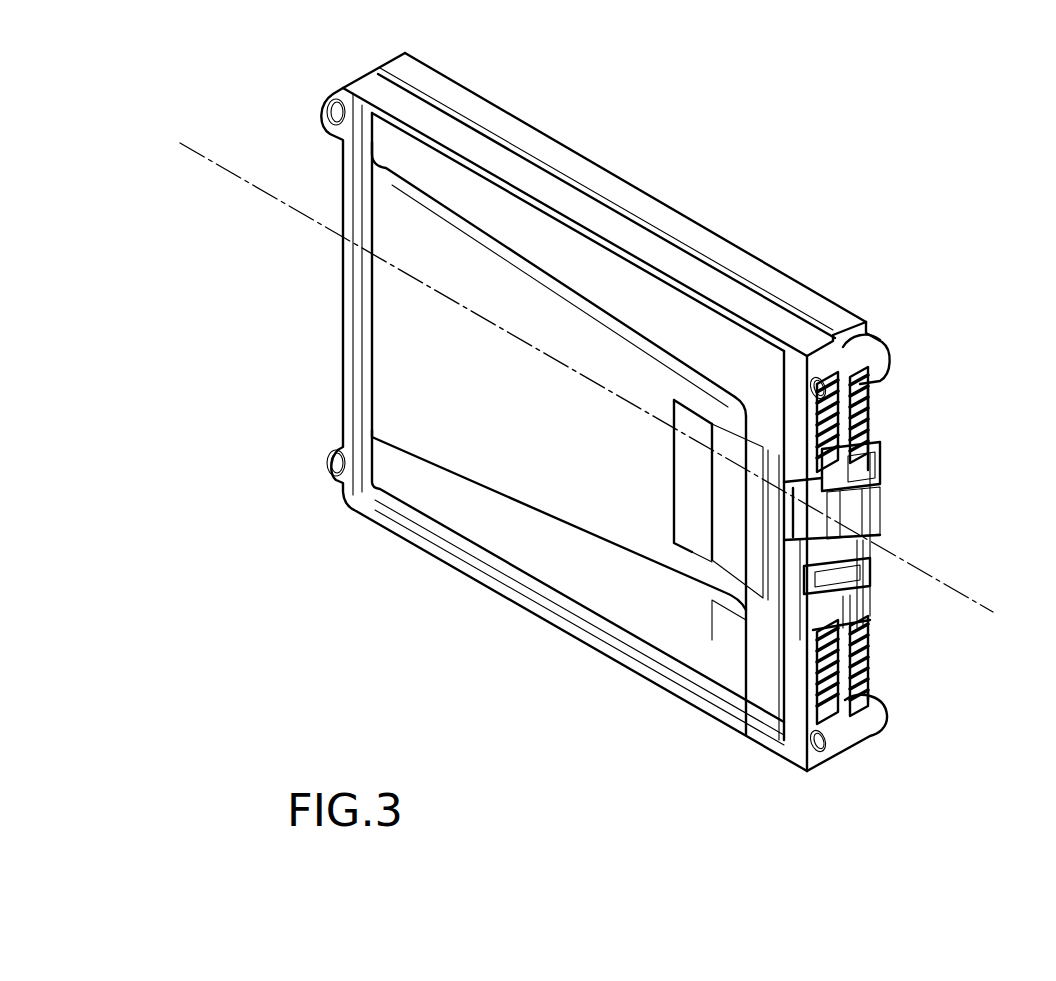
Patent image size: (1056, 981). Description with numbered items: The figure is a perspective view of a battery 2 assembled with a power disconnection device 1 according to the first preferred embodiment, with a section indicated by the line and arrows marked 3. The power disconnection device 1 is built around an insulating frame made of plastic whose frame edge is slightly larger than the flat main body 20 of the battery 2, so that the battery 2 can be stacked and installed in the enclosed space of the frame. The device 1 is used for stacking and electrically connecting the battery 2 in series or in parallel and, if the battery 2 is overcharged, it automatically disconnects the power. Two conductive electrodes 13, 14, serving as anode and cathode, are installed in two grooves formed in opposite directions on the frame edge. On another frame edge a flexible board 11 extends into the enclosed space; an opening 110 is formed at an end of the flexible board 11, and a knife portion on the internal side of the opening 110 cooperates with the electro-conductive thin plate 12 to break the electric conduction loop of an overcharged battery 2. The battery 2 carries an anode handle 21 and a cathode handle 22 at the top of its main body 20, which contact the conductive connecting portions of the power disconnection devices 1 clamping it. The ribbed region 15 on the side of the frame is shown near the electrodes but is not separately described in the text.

The power disconnection device 1 is at (758, 247).
The battery 2 is at (658, 660).
The section line 3 is at (180, 143).
The flexible board 11 is at (512, 450).
The opening 110 is at (687, 487).
The electro-conductive thin plate 12 is at (701, 541).
The conductive electrode 13 is at (870, 527).
The conductive electrode 14 is at (847, 643).
The ribbed portion 15 is at (760, 420).
The main body 20 is at (723, 663).
The anode handle 21 is at (853, 490).
The cathode handle 22 is at (828, 602).